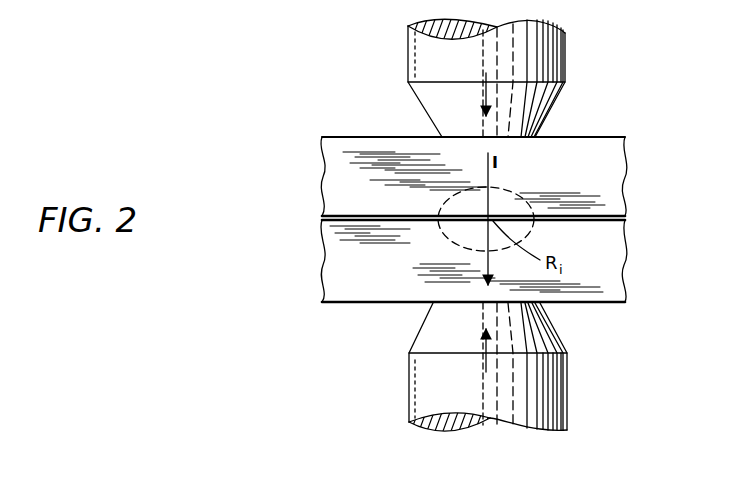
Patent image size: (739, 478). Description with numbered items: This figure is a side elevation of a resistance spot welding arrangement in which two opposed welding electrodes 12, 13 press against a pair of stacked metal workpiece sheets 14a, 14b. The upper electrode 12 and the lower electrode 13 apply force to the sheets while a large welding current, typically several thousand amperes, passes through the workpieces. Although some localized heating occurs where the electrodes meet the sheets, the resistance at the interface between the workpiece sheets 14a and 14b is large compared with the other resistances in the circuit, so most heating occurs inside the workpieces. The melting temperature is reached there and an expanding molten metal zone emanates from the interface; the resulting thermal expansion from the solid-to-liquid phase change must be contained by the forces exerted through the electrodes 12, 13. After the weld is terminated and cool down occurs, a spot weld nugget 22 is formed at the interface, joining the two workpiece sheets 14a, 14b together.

The electrode 12 is at (550, 114).
The electrode 13 is at (553, 330).
The metal workpiece sheet 14a is at (336, 188).
The metal workpiece sheet 14b is at (336, 272).
The spot weld nugget 22 is at (450, 247).